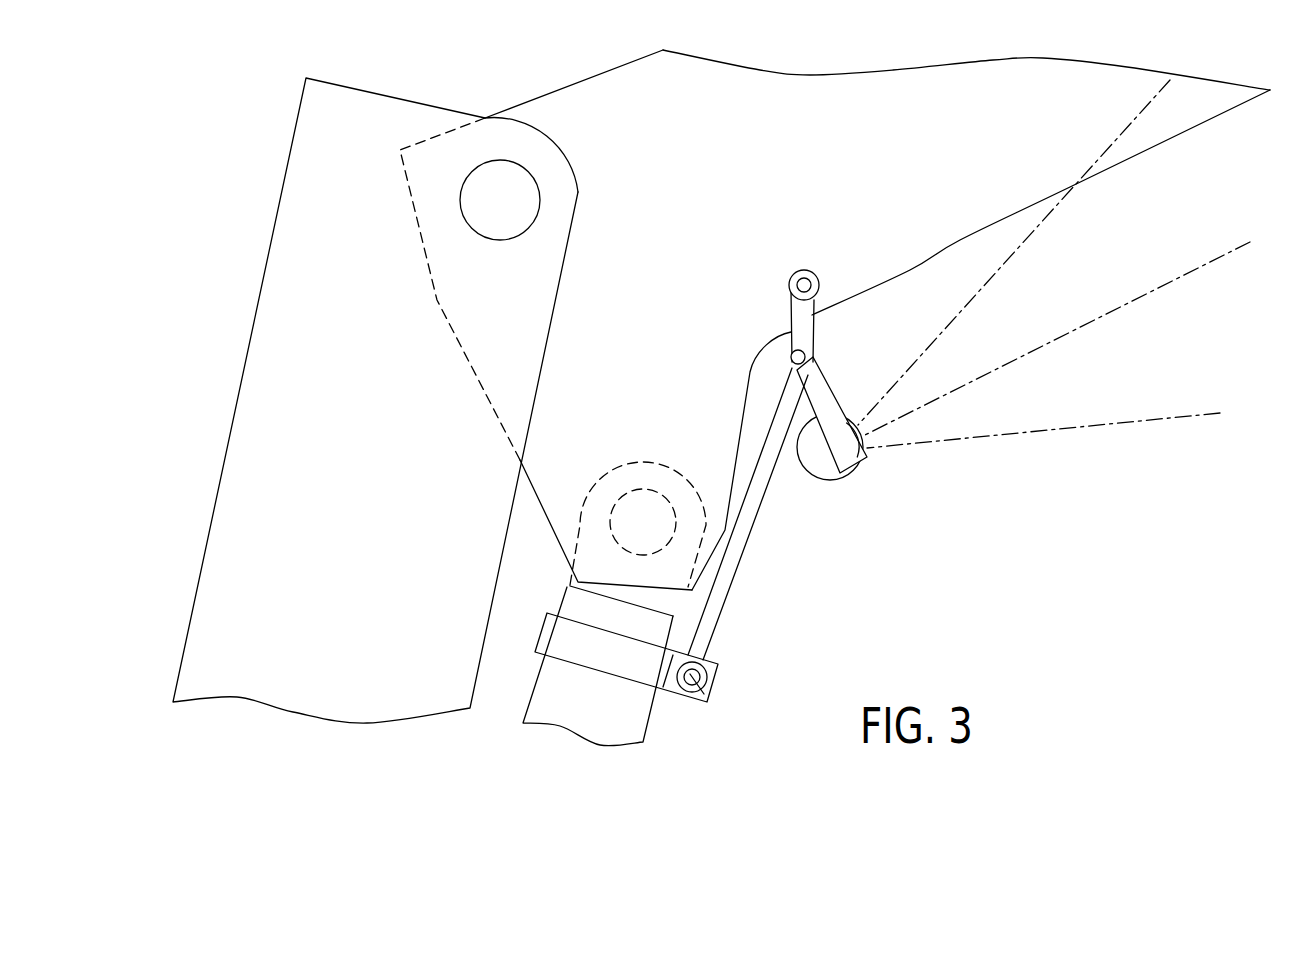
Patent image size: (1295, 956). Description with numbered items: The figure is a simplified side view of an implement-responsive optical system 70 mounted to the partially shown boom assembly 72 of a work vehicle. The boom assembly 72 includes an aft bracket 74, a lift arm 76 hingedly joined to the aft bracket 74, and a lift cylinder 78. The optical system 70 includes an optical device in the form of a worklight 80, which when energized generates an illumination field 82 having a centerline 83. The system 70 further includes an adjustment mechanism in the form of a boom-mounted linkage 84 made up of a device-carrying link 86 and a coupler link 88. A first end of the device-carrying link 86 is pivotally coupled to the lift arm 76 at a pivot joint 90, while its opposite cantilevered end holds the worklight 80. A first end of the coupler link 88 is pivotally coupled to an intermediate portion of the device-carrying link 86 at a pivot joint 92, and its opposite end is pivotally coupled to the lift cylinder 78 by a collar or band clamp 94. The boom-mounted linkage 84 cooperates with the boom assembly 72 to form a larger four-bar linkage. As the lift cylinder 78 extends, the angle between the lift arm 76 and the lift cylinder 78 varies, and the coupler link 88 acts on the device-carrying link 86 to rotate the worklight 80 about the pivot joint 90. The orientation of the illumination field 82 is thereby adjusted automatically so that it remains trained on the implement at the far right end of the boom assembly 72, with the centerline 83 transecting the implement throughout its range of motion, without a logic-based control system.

The implement-responsive optical system 70 is at (835, 438).
The boom assembly 72 is at (375, 400).
The aft bracket 74 is at (342, 132).
The lift arm 76 is at (684, 95).
The lift cylinder 78 is at (555, 704).
The worklight 80 is at (848, 462).
The illumination field 82 is at (1060, 407).
The centerline 83 is at (1078, 328).
The boom-mounted linkage 84 is at (824, 382).
The device-carrying link 86 is at (803, 335).
The coupler link 88 is at (728, 588).
The pivot joint 90 is at (795, 279).
The pivot joint 92 is at (790, 357).
The band clamp 94 is at (708, 690).